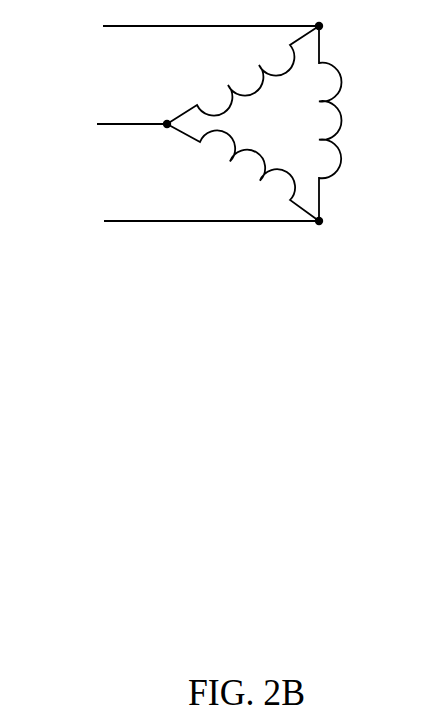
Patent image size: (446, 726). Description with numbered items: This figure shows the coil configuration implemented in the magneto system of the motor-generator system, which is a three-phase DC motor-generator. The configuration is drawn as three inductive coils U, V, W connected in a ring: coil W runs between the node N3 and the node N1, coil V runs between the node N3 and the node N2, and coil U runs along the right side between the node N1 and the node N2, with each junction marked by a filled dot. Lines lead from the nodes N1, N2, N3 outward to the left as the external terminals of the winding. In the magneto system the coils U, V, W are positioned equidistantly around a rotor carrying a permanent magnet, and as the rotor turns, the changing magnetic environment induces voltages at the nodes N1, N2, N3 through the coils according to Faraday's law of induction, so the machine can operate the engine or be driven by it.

The node N1 is at (185, 24).
The node N2 is at (185, 223).
The node N3 is at (109, 123).
The inductive coil U is at (349, 123).
The inductive coil V is at (243, 172).
The inductive coil W is at (243, 75).